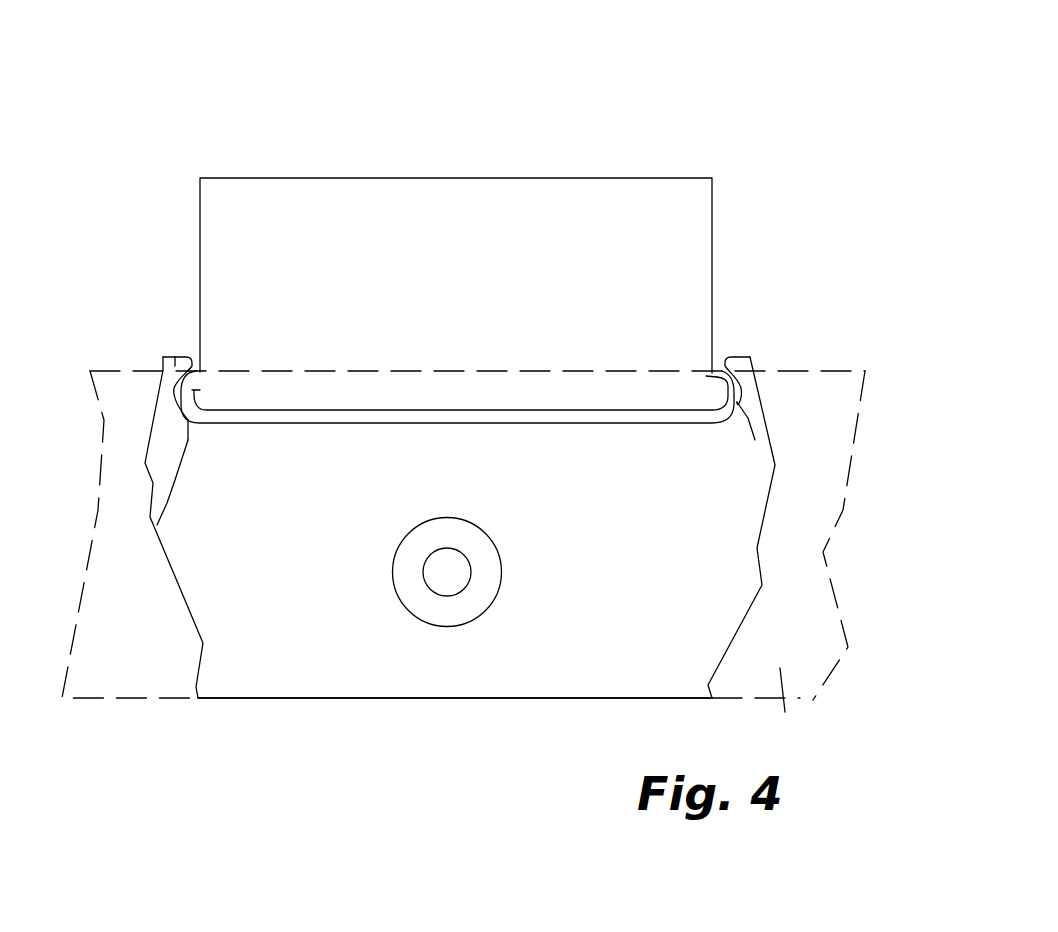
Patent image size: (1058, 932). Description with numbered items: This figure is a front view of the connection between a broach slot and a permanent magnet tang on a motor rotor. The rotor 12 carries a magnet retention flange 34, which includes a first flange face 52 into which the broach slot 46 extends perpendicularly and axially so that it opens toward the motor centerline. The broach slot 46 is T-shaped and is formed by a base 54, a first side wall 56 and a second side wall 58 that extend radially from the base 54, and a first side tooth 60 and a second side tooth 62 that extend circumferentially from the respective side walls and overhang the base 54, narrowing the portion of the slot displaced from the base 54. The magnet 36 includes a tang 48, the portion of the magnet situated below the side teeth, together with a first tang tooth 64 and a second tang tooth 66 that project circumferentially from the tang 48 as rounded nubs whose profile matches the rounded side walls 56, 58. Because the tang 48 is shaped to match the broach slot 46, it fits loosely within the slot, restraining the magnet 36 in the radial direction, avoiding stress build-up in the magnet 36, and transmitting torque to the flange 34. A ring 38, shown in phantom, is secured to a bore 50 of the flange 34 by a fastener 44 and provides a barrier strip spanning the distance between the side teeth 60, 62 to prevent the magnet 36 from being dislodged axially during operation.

The rotor 12 is at (697, 118).
The magnet retention flange 34 is at (682, 673).
The magnet 36 is at (493, 297).
The ring 38 is at (785, 712).
The fastener 44 is at (462, 572).
The broach slot 46 is at (234, 454).
The tang 48 is at (420, 410).
The bore 50 is at (431, 625).
The first flange face 52 is at (640, 599).
The base 54 is at (380, 423).
The first side wall 56 is at (755, 440).
The second side wall 58 is at (157, 525).
The first side tooth 60 is at (738, 357).
The second side tooth 62 is at (175, 357).
The first tang tooth 64 is at (706, 376).
The second tang tooth 66 is at (200, 390).